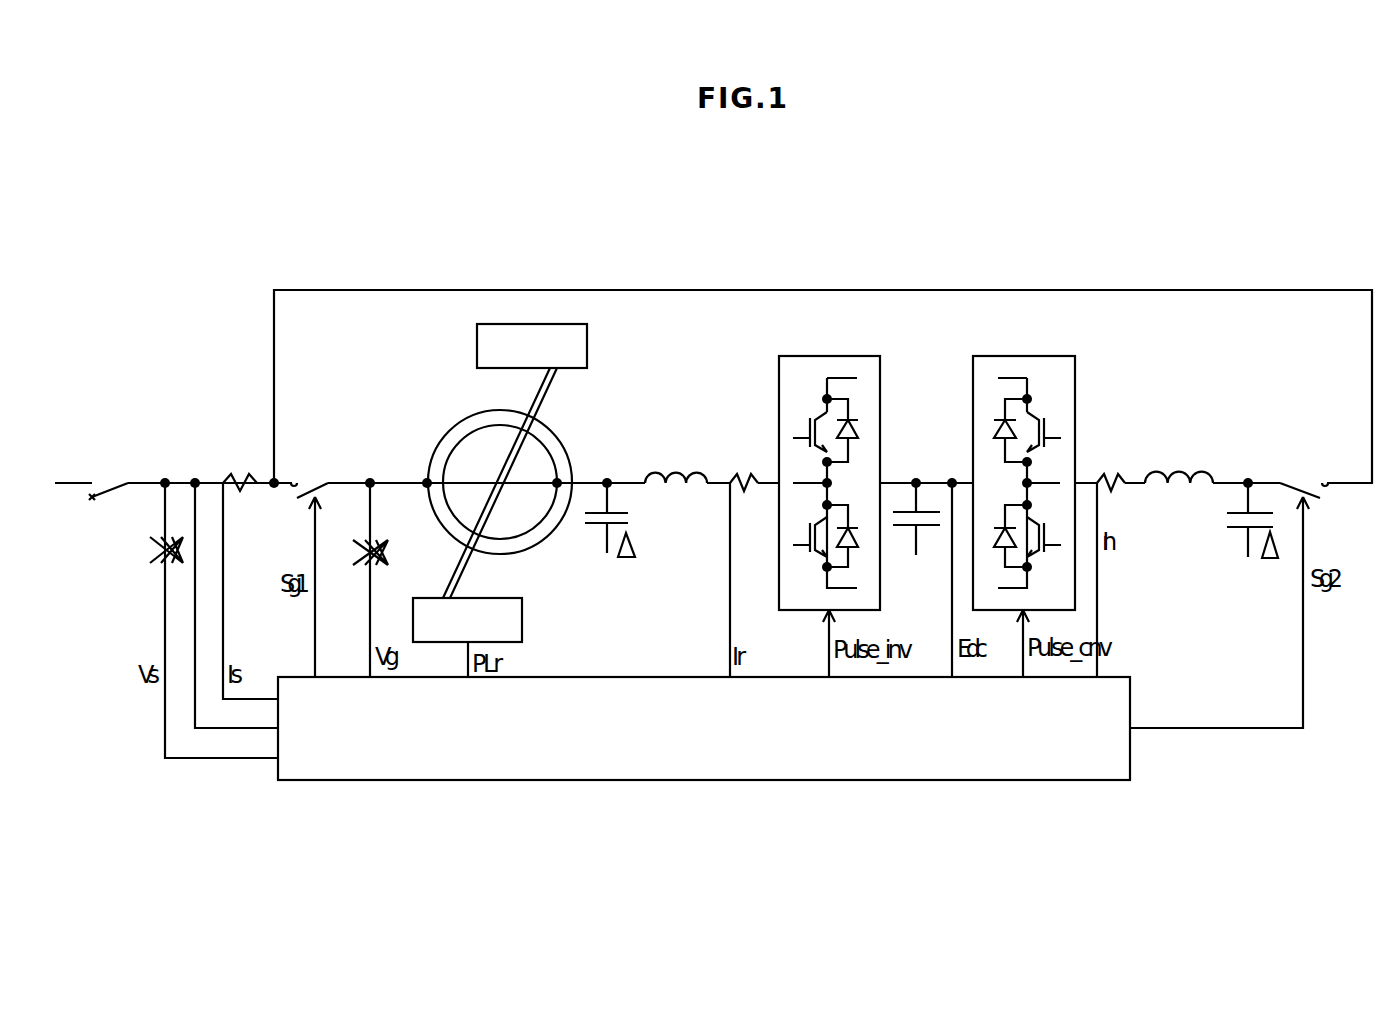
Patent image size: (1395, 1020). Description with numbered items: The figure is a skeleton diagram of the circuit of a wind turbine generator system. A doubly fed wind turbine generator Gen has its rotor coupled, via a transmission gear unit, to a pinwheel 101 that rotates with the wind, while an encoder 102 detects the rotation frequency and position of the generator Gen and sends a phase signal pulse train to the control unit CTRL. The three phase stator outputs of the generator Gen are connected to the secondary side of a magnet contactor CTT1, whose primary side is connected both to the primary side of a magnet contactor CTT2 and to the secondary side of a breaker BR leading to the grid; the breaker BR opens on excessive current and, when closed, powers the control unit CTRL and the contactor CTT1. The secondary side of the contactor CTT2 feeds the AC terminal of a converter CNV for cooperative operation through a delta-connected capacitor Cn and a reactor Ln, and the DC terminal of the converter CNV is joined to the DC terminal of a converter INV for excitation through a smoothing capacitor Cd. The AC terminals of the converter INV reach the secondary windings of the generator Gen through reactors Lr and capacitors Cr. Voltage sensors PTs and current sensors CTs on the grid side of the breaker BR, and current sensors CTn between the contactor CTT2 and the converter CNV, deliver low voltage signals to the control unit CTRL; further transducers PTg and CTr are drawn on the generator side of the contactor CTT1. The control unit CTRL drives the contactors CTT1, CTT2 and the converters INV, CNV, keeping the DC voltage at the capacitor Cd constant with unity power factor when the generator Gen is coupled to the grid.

The pinwheel 101 is at (515, 461).
The encoder 102 is at (467, 637).
The breaker BR is at (91, 476).
The current sensors CTs is at (236, 590).
The magnet contactor CTT1 is at (314, 565).
The voltage sensors PTs is at (191, 620).
The generator potential transformer PTg is at (389, 580).
The wind turbine generator Gen is at (500, 466).
The capacitors Cr is at (603, 521).
The reactors Lr is at (676, 462).
The generator-side current transformer CTr is at (745, 560).
The converter for excitation INV is at (829, 501).
The smoothing capacitor Cd is at (918, 522).
The converter for cooperative operation CNV is at (1024, 501).
The current sensors CTn is at (1108, 561).
The reactor Ln is at (1179, 463).
The capacitor Cn is at (1248, 523).
The magnet contactor CTT2 is at (1229, 585).
The control unit CTRL is at (704, 728).